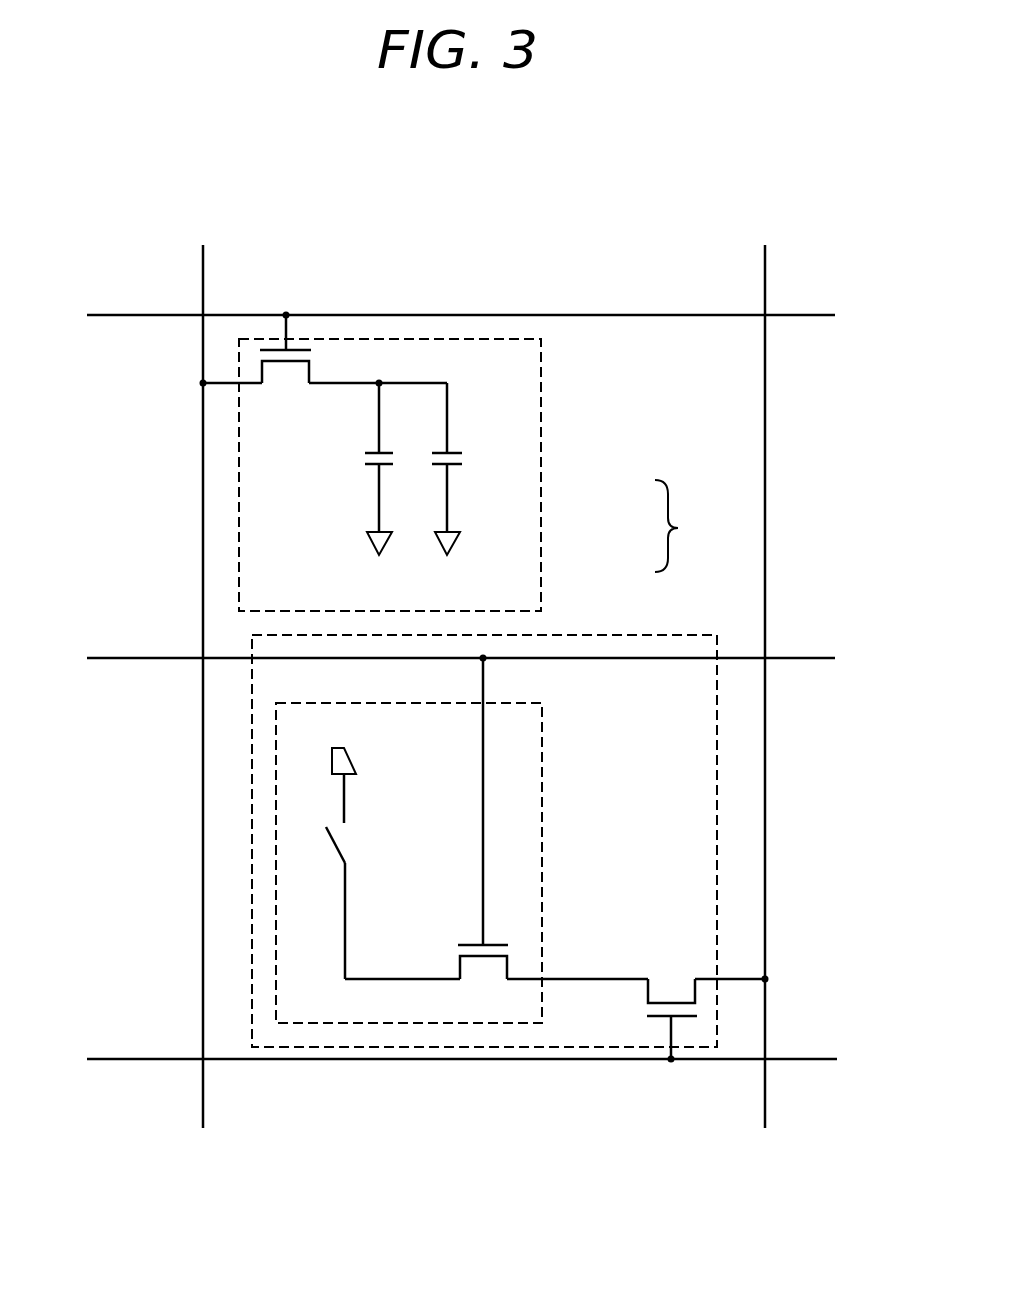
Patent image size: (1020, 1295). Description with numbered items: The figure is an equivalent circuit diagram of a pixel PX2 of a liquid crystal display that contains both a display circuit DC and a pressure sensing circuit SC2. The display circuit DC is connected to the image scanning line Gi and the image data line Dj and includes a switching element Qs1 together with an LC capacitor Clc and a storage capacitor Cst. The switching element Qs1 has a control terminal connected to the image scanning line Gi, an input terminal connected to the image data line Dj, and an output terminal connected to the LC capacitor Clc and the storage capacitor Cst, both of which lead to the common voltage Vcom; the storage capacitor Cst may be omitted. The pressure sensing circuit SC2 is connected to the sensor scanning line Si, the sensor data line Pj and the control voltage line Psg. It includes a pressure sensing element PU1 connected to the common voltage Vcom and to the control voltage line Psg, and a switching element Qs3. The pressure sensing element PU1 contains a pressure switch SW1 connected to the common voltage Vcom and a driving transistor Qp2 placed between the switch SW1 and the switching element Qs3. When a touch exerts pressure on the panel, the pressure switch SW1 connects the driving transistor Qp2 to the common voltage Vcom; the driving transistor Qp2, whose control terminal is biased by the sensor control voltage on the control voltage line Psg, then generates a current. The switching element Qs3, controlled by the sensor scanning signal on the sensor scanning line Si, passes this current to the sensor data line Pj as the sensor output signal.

The image data line Dj is at (205, 666).
The image scanning line Gi is at (443, 309).
The switching element Qs1 is at (286, 367).
The LC capacitor Clc is at (352, 457).
The storage capacitor Cst is at (472, 457).
The common voltage Vcom is at (388, 677).
The display circuit DC is at (541, 495).
The pressure sensing circuit SC2 is at (595, 634).
The pixel PX2 is at (696, 526).
The control voltage line Psg is at (499, 663).
The pressure sensing element PU1 is at (542, 820).
The pressure switch SW1 is at (373, 903).
The driving transistor Qp2 is at (485, 839).
The switching element Qs3 is at (668, 1000).
The sensor scanning line Si is at (486, 1064).
The sensor data line Pj is at (776, 711).